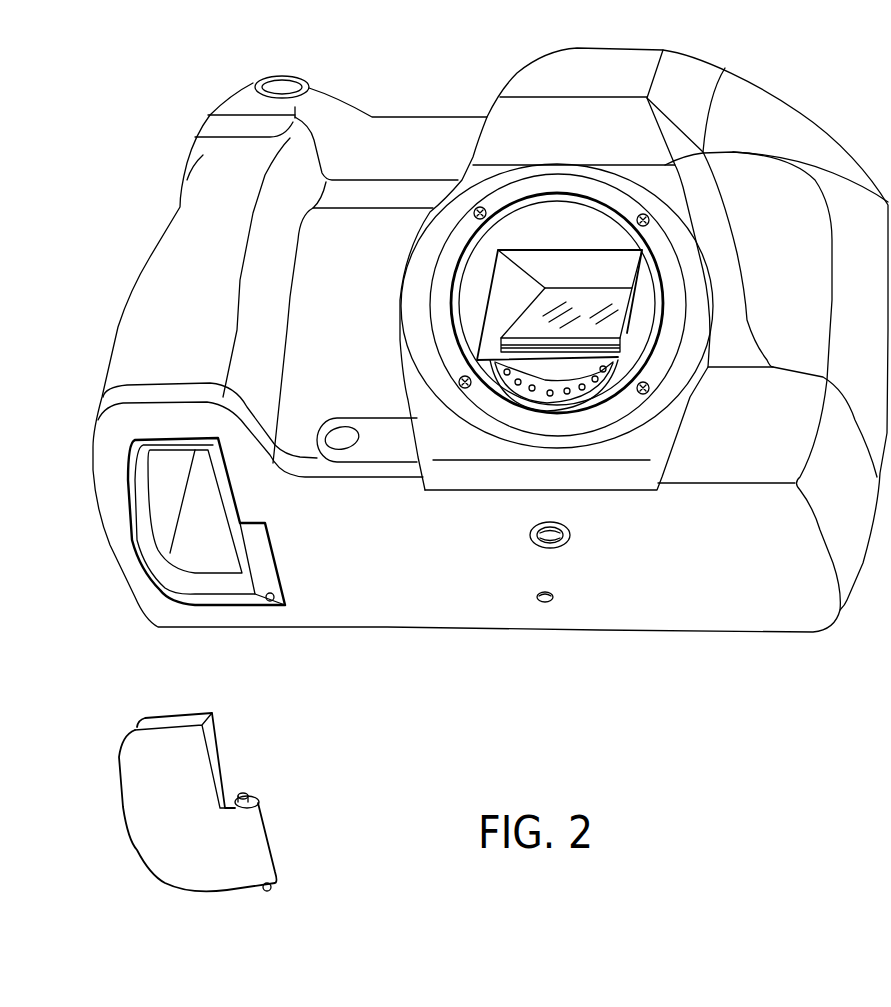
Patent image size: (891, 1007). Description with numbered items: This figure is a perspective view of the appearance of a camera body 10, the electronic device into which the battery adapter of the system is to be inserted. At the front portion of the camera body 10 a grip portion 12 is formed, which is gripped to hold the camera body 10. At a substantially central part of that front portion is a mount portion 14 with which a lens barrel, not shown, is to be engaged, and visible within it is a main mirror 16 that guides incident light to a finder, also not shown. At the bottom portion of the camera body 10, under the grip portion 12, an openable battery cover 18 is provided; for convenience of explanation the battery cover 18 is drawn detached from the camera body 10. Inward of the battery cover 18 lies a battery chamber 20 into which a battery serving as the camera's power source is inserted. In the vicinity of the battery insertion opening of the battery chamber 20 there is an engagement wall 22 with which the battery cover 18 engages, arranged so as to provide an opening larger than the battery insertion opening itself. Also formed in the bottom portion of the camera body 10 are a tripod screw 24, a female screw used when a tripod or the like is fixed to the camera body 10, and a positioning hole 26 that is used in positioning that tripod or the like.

The camera body 10 is at (448, 75).
The grip portion 12 is at (168, 287).
The mount portion 14 is at (673, 312).
The main mirror 16 is at (610, 328).
The battery cover 18 is at (197, 757).
The battery chamber 20 is at (228, 562).
The engagement wall 22 is at (213, 558).
The tripod screw 24 is at (572, 540).
The positioning hole 26 is at (540, 603).